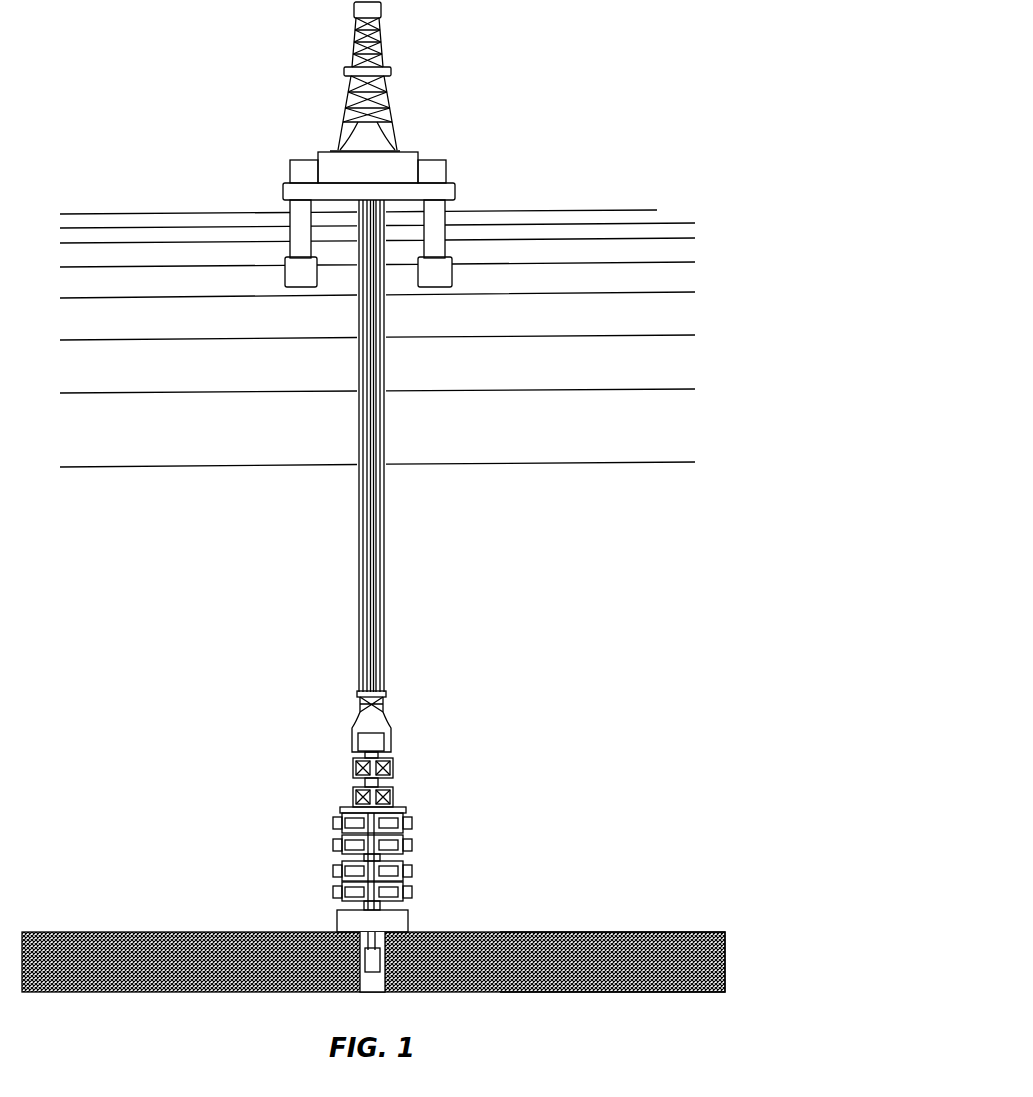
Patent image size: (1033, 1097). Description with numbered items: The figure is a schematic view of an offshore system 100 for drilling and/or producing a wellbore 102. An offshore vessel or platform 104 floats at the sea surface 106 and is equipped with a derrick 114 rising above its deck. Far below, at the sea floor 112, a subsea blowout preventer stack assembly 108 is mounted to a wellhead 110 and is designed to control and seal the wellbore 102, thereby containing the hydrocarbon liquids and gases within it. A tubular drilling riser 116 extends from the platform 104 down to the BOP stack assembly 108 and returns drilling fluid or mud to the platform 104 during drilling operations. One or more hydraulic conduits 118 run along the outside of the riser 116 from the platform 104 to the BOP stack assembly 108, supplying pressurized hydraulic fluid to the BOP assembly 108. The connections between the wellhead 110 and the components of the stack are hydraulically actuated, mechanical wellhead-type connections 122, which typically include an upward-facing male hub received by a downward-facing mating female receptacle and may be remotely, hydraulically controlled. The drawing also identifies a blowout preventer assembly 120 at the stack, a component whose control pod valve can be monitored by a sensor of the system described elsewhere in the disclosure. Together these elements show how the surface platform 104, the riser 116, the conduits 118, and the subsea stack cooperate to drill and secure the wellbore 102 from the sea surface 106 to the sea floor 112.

The offshore system 100 is at (624, 46).
The wellbore 102 is at (470, 927).
The offshore vessel or platform 104 is at (453, 183).
The sea surface 106 is at (632, 210).
The subsea blowout preventer stack assembly 108 is at (287, 840).
The wellhead 110 is at (414, 918).
The sea floor 112 is at (678, 927).
The derrick 114 is at (383, 52).
The tubular drilling riser 116 is at (384, 498).
The hydraulic conduits 118 is at (386, 553).
The blowout preventer assembly 120 is at (386, 614).
The hydraulically actuated mechanical wellhead-type connections 122 is at (345, 905).